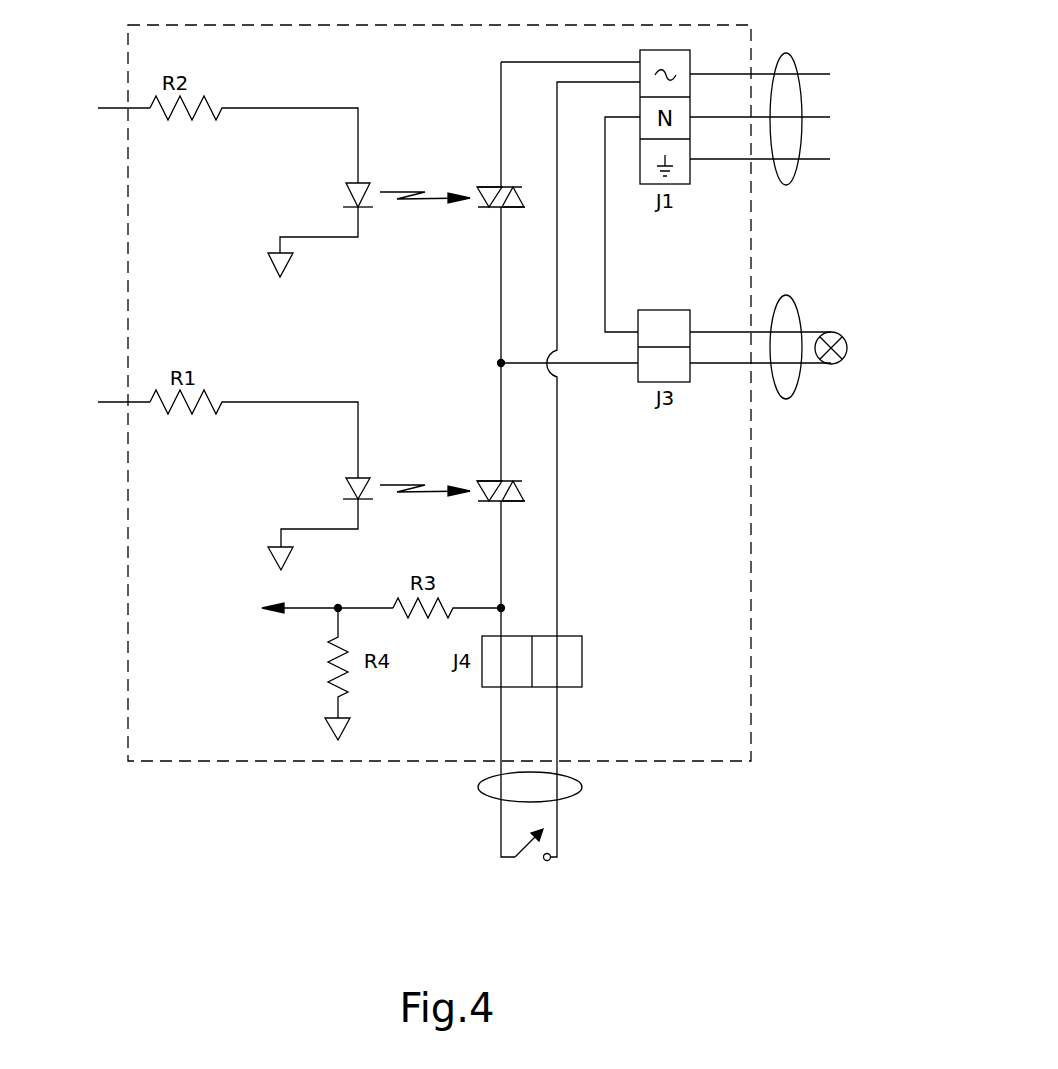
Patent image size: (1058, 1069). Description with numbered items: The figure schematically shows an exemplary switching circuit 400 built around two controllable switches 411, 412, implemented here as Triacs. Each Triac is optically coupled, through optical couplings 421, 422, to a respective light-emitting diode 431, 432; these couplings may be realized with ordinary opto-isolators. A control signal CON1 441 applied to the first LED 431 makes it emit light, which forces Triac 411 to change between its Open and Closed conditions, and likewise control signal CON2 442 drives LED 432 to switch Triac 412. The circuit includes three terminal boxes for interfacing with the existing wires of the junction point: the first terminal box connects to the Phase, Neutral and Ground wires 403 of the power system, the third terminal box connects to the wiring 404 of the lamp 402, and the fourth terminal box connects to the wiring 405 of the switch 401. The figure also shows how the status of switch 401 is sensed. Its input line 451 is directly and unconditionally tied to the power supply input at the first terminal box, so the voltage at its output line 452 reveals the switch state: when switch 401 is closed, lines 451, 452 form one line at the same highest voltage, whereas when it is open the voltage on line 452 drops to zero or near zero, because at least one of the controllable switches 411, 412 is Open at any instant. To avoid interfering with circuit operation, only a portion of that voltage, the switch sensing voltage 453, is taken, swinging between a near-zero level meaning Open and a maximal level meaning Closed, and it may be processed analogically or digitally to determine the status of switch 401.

The switching circuit 400 is at (282, 780).
The switch 401 is at (553, 861).
The lamp 402 is at (840, 365).
The Phase, Neutral and Ground wires 403 is at (787, 185).
The lamp wiring 404 is at (790, 398).
The switch wiring 405 is at (582, 783).
The controllable switch 411 is at (493, 503).
The controllable switch 412 is at (495, 209).
The optical coupling 421 is at (400, 488).
The optical coupling 422 is at (400, 192).
The light-emitting diode 431 is at (347, 490).
The light-emitting diode 432 is at (347, 193).
The control signal CON1 441 is at (118, 402).
The control signal CON2 442 is at (118, 107).
The input line 451 is at (559, 578).
The output line 452 is at (503, 577).
The switch sensing voltage VSW 453 is at (238, 615).